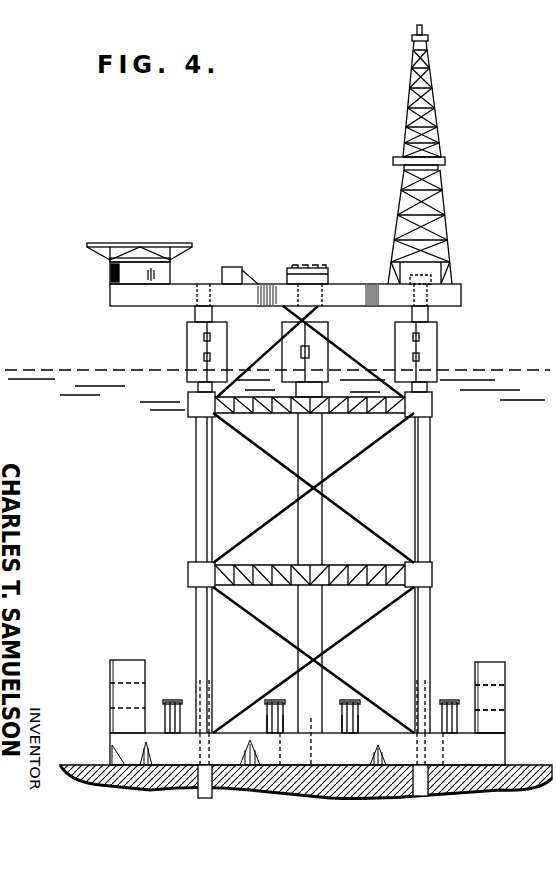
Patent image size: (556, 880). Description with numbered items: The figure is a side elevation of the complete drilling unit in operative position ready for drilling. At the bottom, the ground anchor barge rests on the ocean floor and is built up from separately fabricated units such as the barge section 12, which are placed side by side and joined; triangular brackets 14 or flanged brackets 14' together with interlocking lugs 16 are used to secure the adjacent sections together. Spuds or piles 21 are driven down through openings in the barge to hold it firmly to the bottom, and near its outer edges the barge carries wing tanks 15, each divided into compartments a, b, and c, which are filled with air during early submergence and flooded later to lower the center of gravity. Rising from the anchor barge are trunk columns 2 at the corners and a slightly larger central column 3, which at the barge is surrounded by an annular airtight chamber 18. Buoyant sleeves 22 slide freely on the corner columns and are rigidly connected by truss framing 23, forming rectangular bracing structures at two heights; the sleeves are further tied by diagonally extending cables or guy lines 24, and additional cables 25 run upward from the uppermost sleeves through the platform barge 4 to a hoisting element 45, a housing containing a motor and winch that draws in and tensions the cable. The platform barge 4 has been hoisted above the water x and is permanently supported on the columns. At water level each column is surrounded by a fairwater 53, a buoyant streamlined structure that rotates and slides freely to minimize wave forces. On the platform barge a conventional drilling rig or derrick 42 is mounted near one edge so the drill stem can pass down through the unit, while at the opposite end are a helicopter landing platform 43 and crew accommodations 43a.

The trunk column 2 is at (213, 487).
The central column 3 is at (323, 546).
The platform barge 4 is at (463, 294).
The barge section 12 is at (507, 754).
The triangular bracket 14 is at (319, 703).
The bracket 14' is at (310, 724).
The wing tank 15 is at (128, 660).
The interlocking lug 16 is at (264, 715).
The annular airtight chamber 18 is at (311, 732).
The spud or pile 21 is at (199, 684).
The buoyant sleeve 22 is at (433, 411).
The truss framing 23 is at (262, 414).
The diagonal cable or guy line 24 is at (355, 459).
The cable 25 is at (273, 352).
The drilling rig or derrick 42 is at (444, 187).
The helicopter landing platform 43 is at (147, 243).
The crew accommodations 43a is at (108, 273).
The hoisting element 45 is at (237, 266).
The fairwater 53 is at (186, 342).
The wing tank compartment a is at (498, 677).
The wing tank compartment b is at (498, 701).
The wing tank compartment c is at (498, 723).
The water x is at (507, 370).